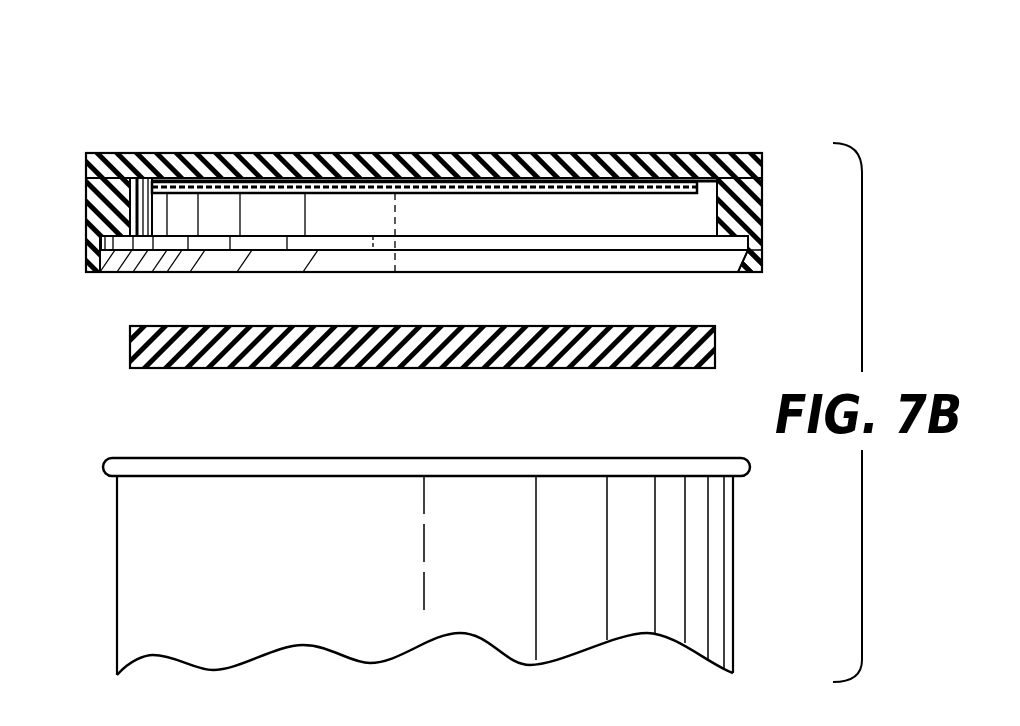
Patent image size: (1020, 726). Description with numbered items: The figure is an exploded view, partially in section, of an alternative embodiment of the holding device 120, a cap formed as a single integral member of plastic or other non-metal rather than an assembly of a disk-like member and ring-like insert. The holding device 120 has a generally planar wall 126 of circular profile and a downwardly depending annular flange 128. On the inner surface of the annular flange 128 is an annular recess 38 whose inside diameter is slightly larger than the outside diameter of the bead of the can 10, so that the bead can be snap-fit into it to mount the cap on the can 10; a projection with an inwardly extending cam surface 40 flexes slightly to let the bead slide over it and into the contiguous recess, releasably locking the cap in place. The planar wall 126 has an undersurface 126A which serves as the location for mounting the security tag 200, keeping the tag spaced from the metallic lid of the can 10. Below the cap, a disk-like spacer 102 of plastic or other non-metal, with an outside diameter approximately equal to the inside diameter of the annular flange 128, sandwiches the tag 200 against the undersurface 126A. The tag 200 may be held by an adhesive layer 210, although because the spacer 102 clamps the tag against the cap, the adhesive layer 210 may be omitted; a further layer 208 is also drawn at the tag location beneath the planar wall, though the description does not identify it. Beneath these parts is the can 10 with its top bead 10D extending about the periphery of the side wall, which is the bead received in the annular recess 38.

The holding device 120 is at (444, 176).
The planar wall 126 is at (441, 155).
The annular flange 128 is at (758, 212).
The undersurface 126A is at (140, 180).
The sensor layer 208 is at (222, 180).
The adhesive layer 210 is at (620, 178).
The security tag 200 is at (343, 197).
The annular recess 38 is at (455, 244).
The cam surface 40 is at (743, 254).
The spacer 102 is at (388, 360).
The can 10 is at (402, 529).
The top bead 10D is at (122, 468).